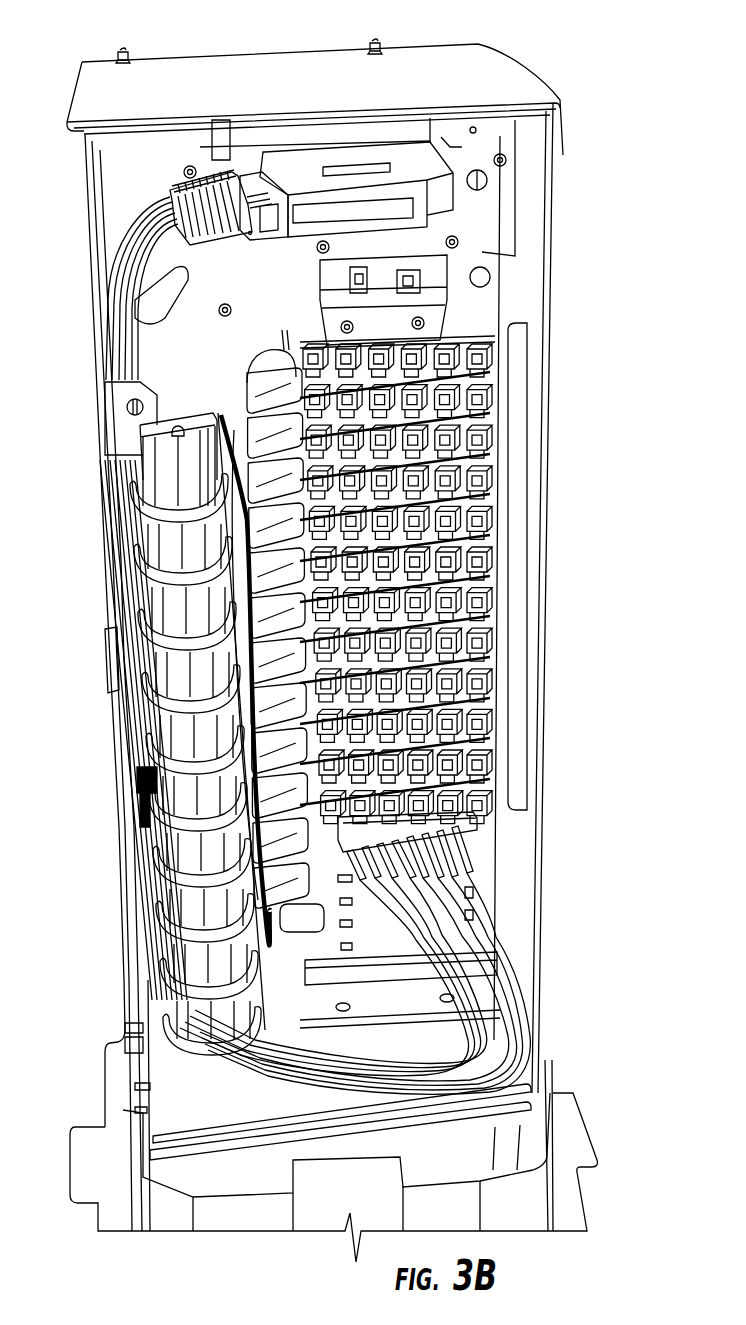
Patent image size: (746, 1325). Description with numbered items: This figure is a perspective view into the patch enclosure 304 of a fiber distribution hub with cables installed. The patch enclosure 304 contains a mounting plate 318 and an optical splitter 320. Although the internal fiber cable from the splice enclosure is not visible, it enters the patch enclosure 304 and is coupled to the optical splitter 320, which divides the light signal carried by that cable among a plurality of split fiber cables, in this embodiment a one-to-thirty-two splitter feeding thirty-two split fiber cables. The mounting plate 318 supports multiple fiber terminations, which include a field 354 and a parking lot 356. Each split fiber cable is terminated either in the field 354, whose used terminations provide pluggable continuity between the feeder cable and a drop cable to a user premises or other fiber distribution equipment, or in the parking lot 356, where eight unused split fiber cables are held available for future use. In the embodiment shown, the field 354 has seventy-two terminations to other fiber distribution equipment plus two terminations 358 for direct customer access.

The patch enclosure 304 is at (350, 72).
The optical splitter 320 is at (294, 177).
The terminations for direct customer access 358 is at (382, 272).
The field 354 is at (527, 590).
The parking lot 356 is at (487, 862).
The mounting plate 318 is at (387, 943).